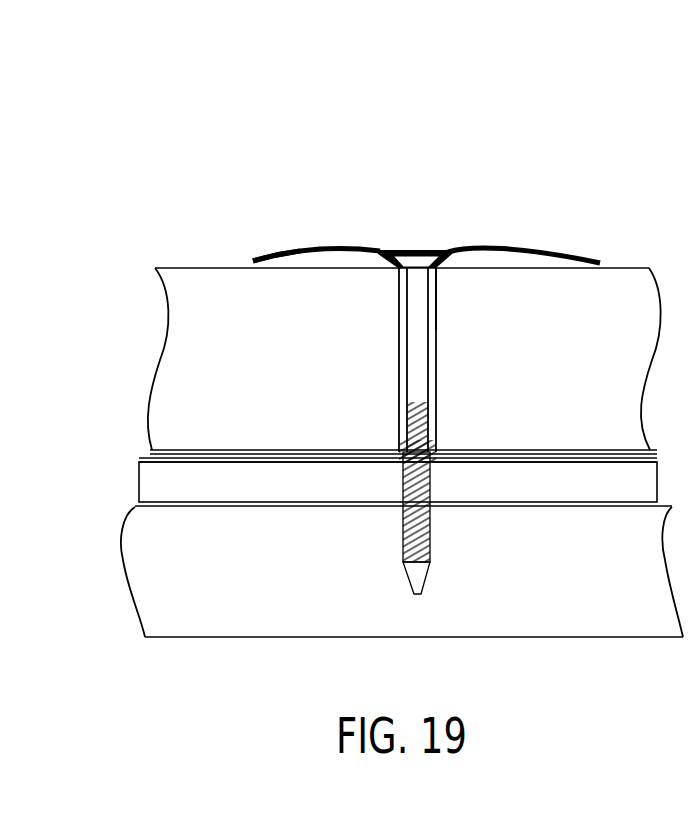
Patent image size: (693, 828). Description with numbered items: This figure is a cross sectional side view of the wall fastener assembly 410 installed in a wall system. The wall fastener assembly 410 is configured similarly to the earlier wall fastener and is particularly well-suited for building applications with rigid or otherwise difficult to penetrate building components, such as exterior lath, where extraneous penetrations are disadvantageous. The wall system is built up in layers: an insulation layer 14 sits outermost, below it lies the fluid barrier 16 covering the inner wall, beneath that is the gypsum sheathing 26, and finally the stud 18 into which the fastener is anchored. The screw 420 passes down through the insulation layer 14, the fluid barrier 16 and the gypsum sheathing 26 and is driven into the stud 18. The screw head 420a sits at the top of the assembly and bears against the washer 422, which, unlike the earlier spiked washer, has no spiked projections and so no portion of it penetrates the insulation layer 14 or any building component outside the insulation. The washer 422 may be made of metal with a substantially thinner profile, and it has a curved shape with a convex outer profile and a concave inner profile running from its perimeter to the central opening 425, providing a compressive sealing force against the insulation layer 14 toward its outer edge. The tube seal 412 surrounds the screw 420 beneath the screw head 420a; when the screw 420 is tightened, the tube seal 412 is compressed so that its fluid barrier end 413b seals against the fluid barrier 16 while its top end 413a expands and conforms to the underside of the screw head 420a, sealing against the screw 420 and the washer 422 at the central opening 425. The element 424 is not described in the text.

The insulation layer 14 is at (167, 377).
The fluid barrier 16 is at (140, 452).
The gypsum sheathing 26 is at (148, 478).
The stud 18 is at (142, 567).
The wall fastener assembly 410 is at (262, 152).
The tube seal 412 is at (397, 362).
The top end 413a is at (462, 242).
The fluid barrier end 413b is at (398, 451).
The screw 420 is at (405, 389).
The screw head 420a is at (424, 250).
The washer 422 is at (282, 263).
The flange cap 424 is at (340, 243).
The central opening 425 is at (442, 280).